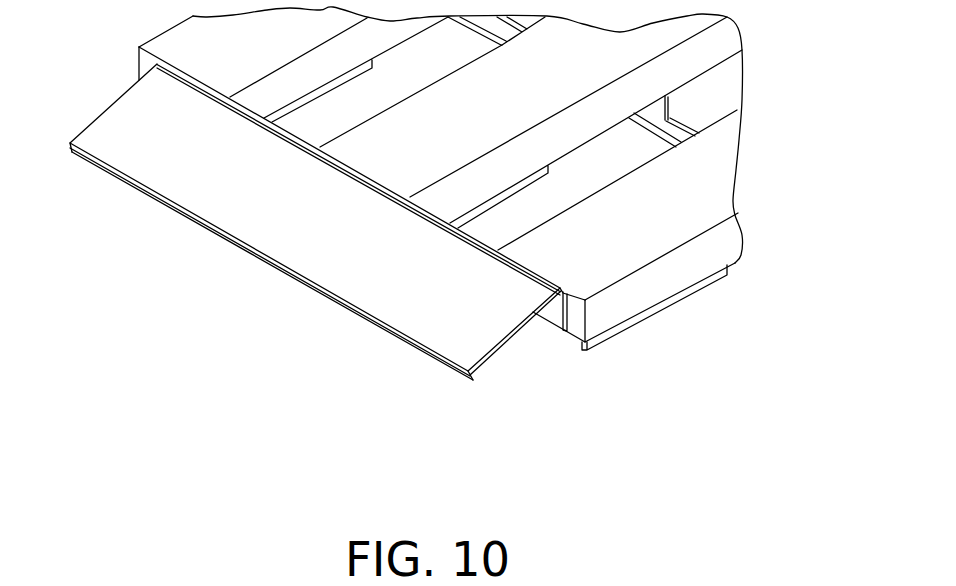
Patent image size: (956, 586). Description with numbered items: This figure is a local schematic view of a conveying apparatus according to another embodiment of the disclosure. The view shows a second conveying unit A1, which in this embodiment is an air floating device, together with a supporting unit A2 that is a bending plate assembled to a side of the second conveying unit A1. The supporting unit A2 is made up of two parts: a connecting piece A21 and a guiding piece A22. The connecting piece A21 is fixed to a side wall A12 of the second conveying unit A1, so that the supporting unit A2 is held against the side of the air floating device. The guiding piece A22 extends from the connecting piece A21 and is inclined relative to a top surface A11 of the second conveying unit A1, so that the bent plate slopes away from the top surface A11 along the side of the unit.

The second conveying unit A1 is at (670, 278).
The top surface A11 is at (693, 197).
The side wall A12 is at (572, 316).
The supporting unit A2 is at (327, 277).
The connecting piece A21 is at (552, 313).
The guiding piece A22 is at (480, 332).